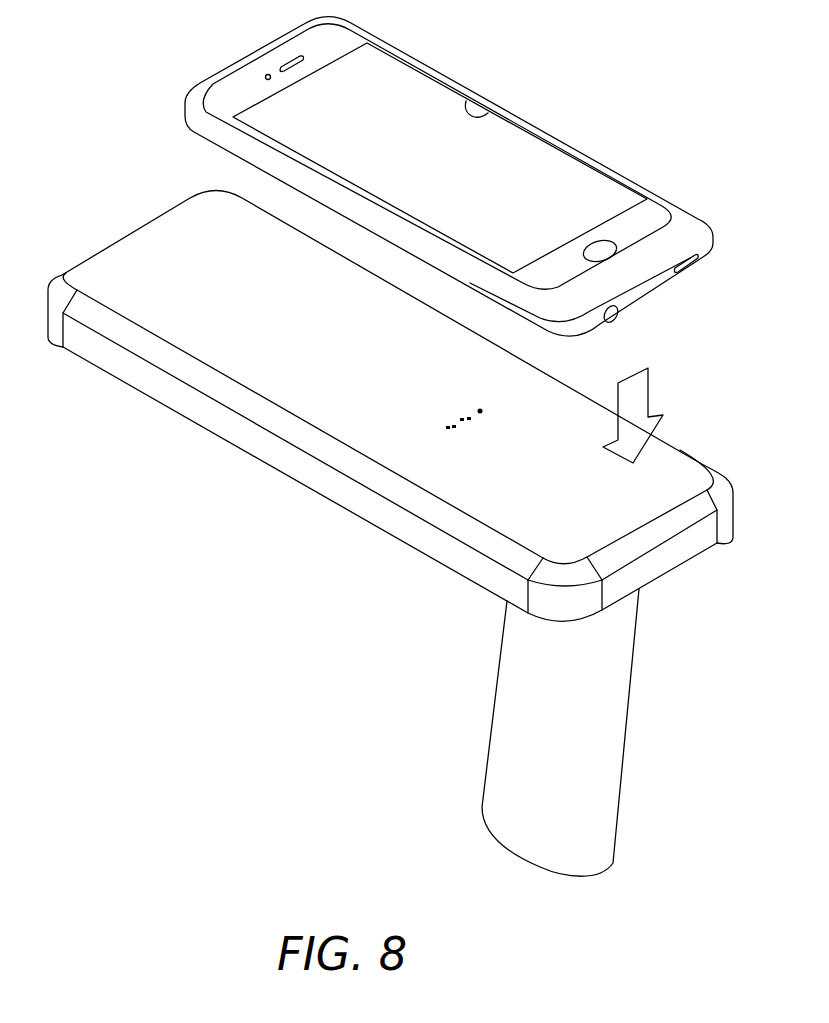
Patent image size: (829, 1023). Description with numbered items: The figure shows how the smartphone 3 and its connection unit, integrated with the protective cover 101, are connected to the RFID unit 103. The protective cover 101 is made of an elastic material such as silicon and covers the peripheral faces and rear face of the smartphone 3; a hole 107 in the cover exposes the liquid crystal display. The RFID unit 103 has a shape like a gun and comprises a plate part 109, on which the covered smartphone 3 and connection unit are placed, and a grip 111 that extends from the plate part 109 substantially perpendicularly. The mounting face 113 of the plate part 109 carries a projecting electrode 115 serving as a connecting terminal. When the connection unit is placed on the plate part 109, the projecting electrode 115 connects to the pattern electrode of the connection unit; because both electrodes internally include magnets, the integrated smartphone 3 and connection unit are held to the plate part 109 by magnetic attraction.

The smartphone 3 is at (628, 227).
The protective cover 101 is at (682, 231).
The RFID unit 103 is at (73, 168).
The hole 107 is at (486, 106).
The plate part 109 is at (100, 247).
The grip 111 is at (630, 727).
The mounting face 113 is at (196, 253).
The projecting electrode 115 is at (479, 424).